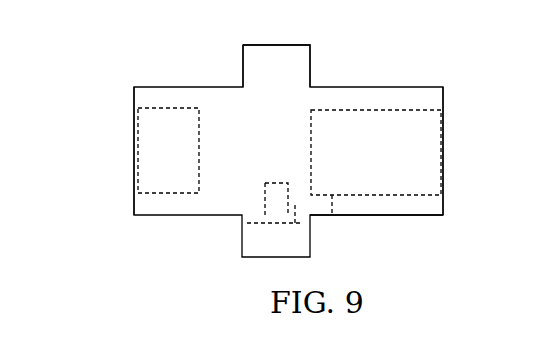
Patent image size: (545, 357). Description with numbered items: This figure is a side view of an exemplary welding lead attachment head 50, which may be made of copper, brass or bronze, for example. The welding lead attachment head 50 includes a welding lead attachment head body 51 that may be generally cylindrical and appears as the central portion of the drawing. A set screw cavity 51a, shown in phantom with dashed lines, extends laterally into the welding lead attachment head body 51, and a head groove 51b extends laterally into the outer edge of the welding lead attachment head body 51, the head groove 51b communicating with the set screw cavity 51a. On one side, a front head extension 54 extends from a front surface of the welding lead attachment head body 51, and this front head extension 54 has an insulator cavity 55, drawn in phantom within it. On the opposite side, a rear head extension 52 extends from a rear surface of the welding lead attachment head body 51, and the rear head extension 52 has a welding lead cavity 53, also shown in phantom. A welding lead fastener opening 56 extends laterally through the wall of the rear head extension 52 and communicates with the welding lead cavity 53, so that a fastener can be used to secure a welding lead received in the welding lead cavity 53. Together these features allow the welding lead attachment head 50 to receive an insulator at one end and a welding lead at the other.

The welding lead attachment head 50 is at (367, 87).
The welding lead attachment head body 51 is at (272, 58).
The set screw cavity 51a is at (258, 208).
The head groove 51b is at (292, 248).
The rear head extension 52 is at (420, 100).
The welding lead cavity 53 is at (427, 195).
The front head extension 54 is at (182, 92).
The insulator cavity 55 is at (150, 188).
The welding lead fastener opening 56 is at (410, 193).